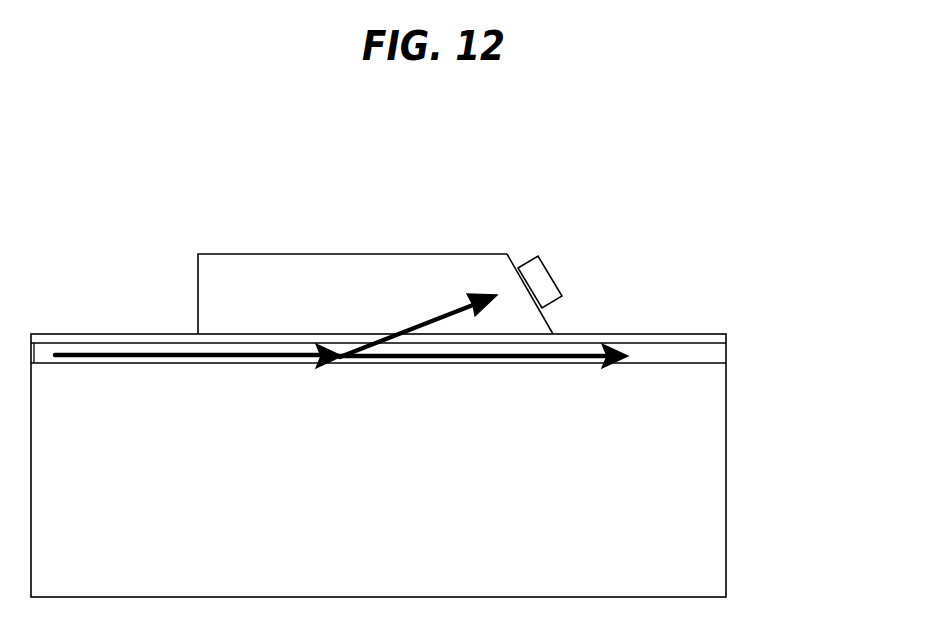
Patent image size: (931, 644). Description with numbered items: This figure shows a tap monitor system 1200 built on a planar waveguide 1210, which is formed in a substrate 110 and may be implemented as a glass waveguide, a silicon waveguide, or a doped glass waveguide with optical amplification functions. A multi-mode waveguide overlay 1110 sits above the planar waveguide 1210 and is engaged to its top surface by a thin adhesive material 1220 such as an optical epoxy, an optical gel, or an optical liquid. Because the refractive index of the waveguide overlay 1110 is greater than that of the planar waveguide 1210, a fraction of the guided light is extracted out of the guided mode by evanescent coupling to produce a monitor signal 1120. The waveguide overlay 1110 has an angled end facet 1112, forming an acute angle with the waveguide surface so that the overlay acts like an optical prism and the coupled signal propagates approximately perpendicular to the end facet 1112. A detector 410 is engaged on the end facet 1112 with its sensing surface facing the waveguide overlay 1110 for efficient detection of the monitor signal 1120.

The tap monitor system 1200 is at (235, 147).
The substrate 110 is at (457, 547).
The thin adhesive material 1220 is at (700, 332).
The planar waveguide 1210 is at (727, 356).
The waveguide overlay 1110 is at (220, 290).
The end facet 1112 is at (518, 275).
The detector 410 is at (553, 277).
The monitor signal 1120 is at (425, 318).